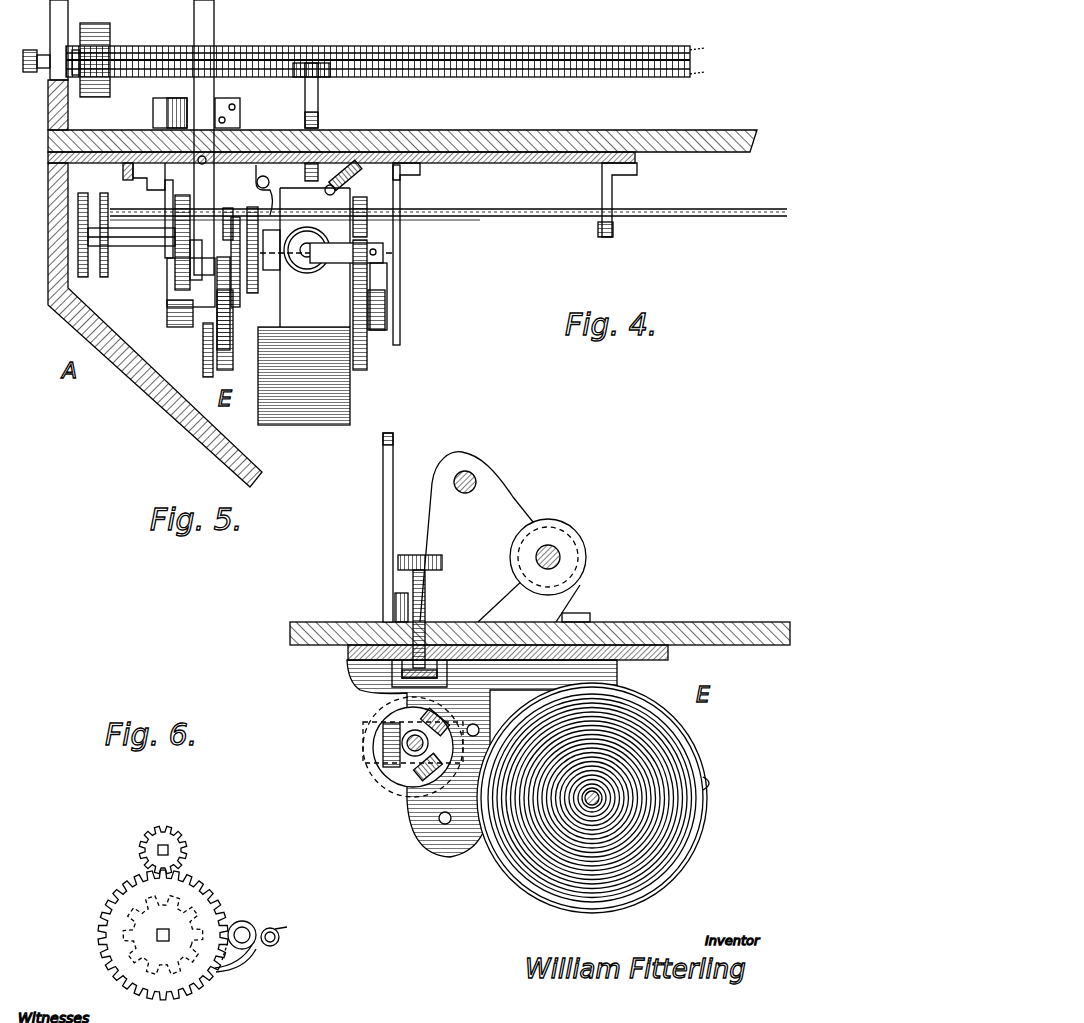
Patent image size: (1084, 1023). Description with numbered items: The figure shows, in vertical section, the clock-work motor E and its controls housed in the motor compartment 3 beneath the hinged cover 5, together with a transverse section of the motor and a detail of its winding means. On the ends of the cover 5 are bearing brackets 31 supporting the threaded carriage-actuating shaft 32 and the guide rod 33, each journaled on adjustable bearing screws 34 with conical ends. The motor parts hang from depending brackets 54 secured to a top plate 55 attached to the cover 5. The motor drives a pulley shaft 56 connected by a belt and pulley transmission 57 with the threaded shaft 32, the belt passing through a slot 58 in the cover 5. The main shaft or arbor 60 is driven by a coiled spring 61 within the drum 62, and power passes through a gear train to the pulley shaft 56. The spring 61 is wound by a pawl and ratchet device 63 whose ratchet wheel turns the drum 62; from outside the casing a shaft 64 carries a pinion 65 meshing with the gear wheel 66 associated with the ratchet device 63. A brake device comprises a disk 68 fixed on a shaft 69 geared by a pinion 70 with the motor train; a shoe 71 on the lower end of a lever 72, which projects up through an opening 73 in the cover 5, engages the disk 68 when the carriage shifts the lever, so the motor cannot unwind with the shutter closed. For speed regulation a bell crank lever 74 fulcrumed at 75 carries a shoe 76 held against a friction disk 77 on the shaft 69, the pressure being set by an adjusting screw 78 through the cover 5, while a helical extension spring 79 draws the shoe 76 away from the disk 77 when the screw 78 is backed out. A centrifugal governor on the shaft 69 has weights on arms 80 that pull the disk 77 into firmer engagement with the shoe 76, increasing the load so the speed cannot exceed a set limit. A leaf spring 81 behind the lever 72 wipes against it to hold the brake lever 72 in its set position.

In FIG. 4, the motor compartment 3 is at (304, 243).
In FIG. 4, the hinged cover 5 is at (508, 130).
In FIG. 5, the hinged cover 5 is at (708, 622).
In FIG. 4, the bearing brackets 31 is at (52, 30).
In FIG. 5, the bearing brackets 31 is at (495, 520).
In FIG. 4, the threaded shaft 32 is at (430, 77).
In FIG. 5, the threaded shaft 32 is at (561, 557).
In FIG. 5, the guide rod 33 is at (477, 480).
In FIG. 4, the adjustable bearing screws 34 is at (25, 74).
In FIG. 4, the depending brackets 54 is at (400, 197).
In FIG. 5, the depending brackets 54 is at (375, 676).
In FIG. 4, the top plate 55 is at (543, 163).
In FIG. 5, the top plate 55 is at (665, 655).
In FIG. 4, the pulley shaft 56 is at (145, 242).
In FIG. 4, the belt and pulley transmission 57 is at (90, 175).
In FIG. 5, the belt and pulley transmission 57 is at (580, 598).
In FIG. 4, the slot 58 is at (80, 145).
In FIG. 4, the main shaft or arbor 60 is at (185, 302).
In FIG. 5, the main shaft or arbor 60 is at (600, 803).
In FIG. 5, the coiled spring 61 is at (694, 770).
In FIG. 4, the drum 62 is at (318, 418).
In FIG. 5, the drum 62 is at (690, 858).
In FIG. 4, the pawl and ratchet device 63 is at (386, 324).
In FIG. 6, the pawl and ratchet device 63 is at (232, 908).
In FIG. 4, the shaft 64 is at (566, 222).
In FIG. 4, the pinion 65 is at (368, 232).
In FIG. 6, the pinion 65 is at (183, 833).
In FIG. 4, the gear wheel 66 is at (367, 368).
In FIG. 4, the brake disk 68 is at (227, 216).
In FIG. 4, the brake shaft 69 is at (258, 274).
In FIG. 4, the pinion 70 is at (172, 270).
In FIG. 4, the brake shoe 71 is at (216, 298).
In FIG. 4, the brake lever 72 is at (212, 22).
In FIG. 5, the brake lever 72 is at (383, 510).
In FIG. 4, the opening 73 is at (224, 143).
In FIG. 4, the bell crank lever 74 is at (301, 227).
In FIG. 5, the bell crank lever 74 is at (392, 705).
In FIG. 4, the fulcrum 75 is at (310, 150).
In FIG. 4, the friction shoe 76 is at (300, 275).
In FIG. 4, the friction disk 77 is at (260, 272).
In FIG. 5, the friction disk 77 is at (400, 785).
In FIG. 4, the adjusting screw 78 is at (320, 102).
In FIG. 5, the adjusting screw 78 is at (426, 601).
In FIG. 4, the helical extension spring 79 is at (310, 248).
In FIG. 5, the helical extension spring 79 is at (405, 757).
In FIG. 4, the governor arms 80 is at (388, 263).
In FIG. 5, the governor arms 80 is at (383, 741).
In FIG. 4, the leaf spring 81 is at (165, 107).
In FIG. 5, the leaf spring 81 is at (396, 605).